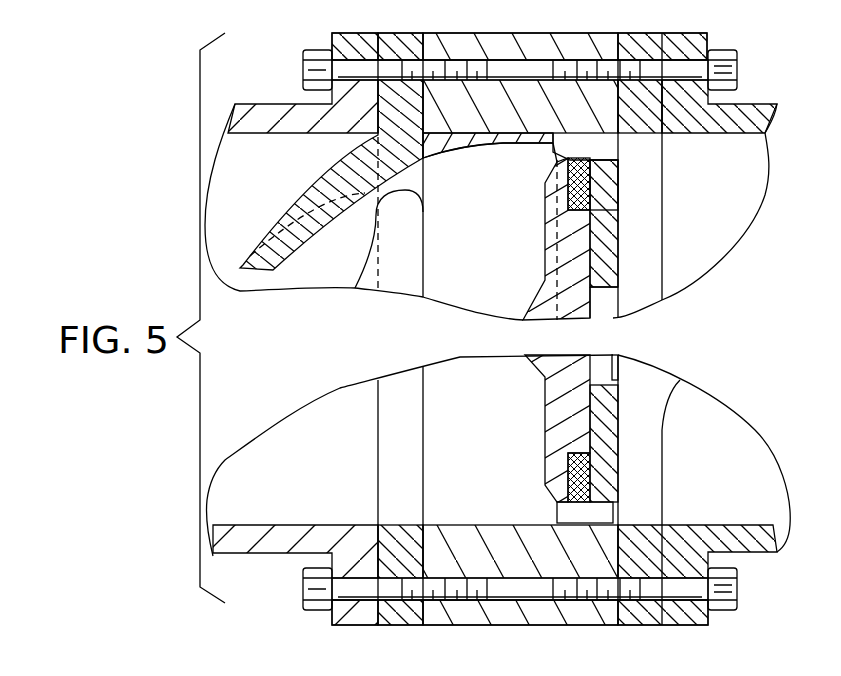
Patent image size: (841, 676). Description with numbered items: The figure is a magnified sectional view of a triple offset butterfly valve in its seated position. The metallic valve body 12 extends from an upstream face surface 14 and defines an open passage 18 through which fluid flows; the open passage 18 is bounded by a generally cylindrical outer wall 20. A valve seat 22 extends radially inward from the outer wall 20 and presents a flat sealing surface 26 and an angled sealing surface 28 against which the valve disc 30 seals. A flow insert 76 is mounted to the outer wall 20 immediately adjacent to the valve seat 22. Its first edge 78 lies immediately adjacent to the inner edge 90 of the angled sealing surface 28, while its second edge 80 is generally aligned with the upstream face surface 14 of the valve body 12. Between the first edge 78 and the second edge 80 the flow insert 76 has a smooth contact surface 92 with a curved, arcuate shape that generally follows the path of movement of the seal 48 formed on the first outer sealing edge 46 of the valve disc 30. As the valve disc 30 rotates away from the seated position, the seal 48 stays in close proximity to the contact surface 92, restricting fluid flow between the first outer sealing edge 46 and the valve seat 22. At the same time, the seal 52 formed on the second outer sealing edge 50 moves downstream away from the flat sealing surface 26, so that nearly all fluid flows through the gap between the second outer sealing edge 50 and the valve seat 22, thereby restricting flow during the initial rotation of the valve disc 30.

The valve body 12 is at (563, 42).
The upstream face surface 14 is at (418, 92).
The open passage 18 is at (444, 433).
The outer wall 20 is at (472, 132).
The valve seat 22 is at (607, 147).
The flat sealing surface 26 is at (604, 492).
The angled sealing surface 28 is at (590, 170).
The valve disc 30 is at (600, 303).
The first outer sealing edge 46 is at (567, 195).
The seal 48 is at (596, 196).
The second outer sealing edge 50 is at (557, 460).
The seal 52 is at (592, 460).
The flow insert 76 is at (440, 150).
The first edge 78 is at (552, 143).
The second edge 80 is at (403, 193).
The inner edge 90 is at (555, 147).
The contact surface 92 is at (488, 145).